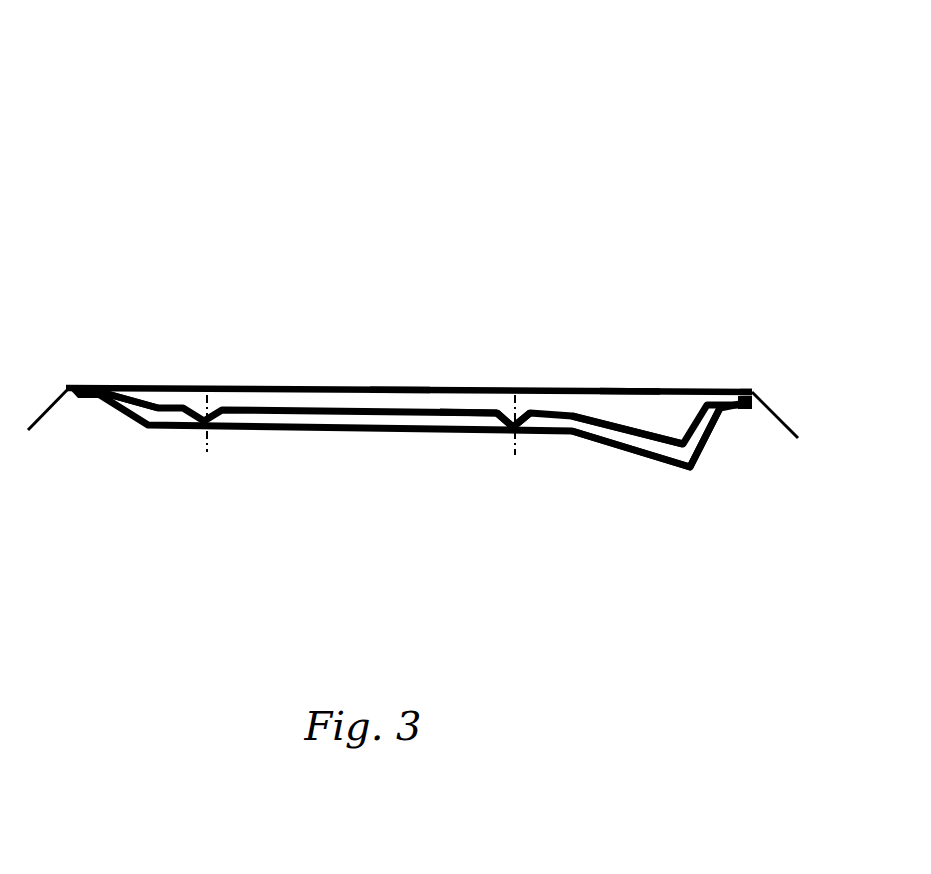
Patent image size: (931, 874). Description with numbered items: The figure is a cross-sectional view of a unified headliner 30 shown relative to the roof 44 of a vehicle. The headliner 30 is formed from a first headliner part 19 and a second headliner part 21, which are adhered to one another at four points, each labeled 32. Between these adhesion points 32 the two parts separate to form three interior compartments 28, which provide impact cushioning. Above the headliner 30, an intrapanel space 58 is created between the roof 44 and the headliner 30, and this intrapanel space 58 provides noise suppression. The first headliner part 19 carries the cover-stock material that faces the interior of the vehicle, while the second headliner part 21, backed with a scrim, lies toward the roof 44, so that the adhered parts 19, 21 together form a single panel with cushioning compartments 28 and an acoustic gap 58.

The first headliner part 19 is at (700, 460).
The second headliner part 21 is at (343, 405).
The interior compartment 28 is at (153, 413).
The headliner 30 is at (407, 437).
The adhesion point 32 is at (503, 413).
The roof 44 is at (283, 387).
The intrapanel space 58 is at (397, 400).